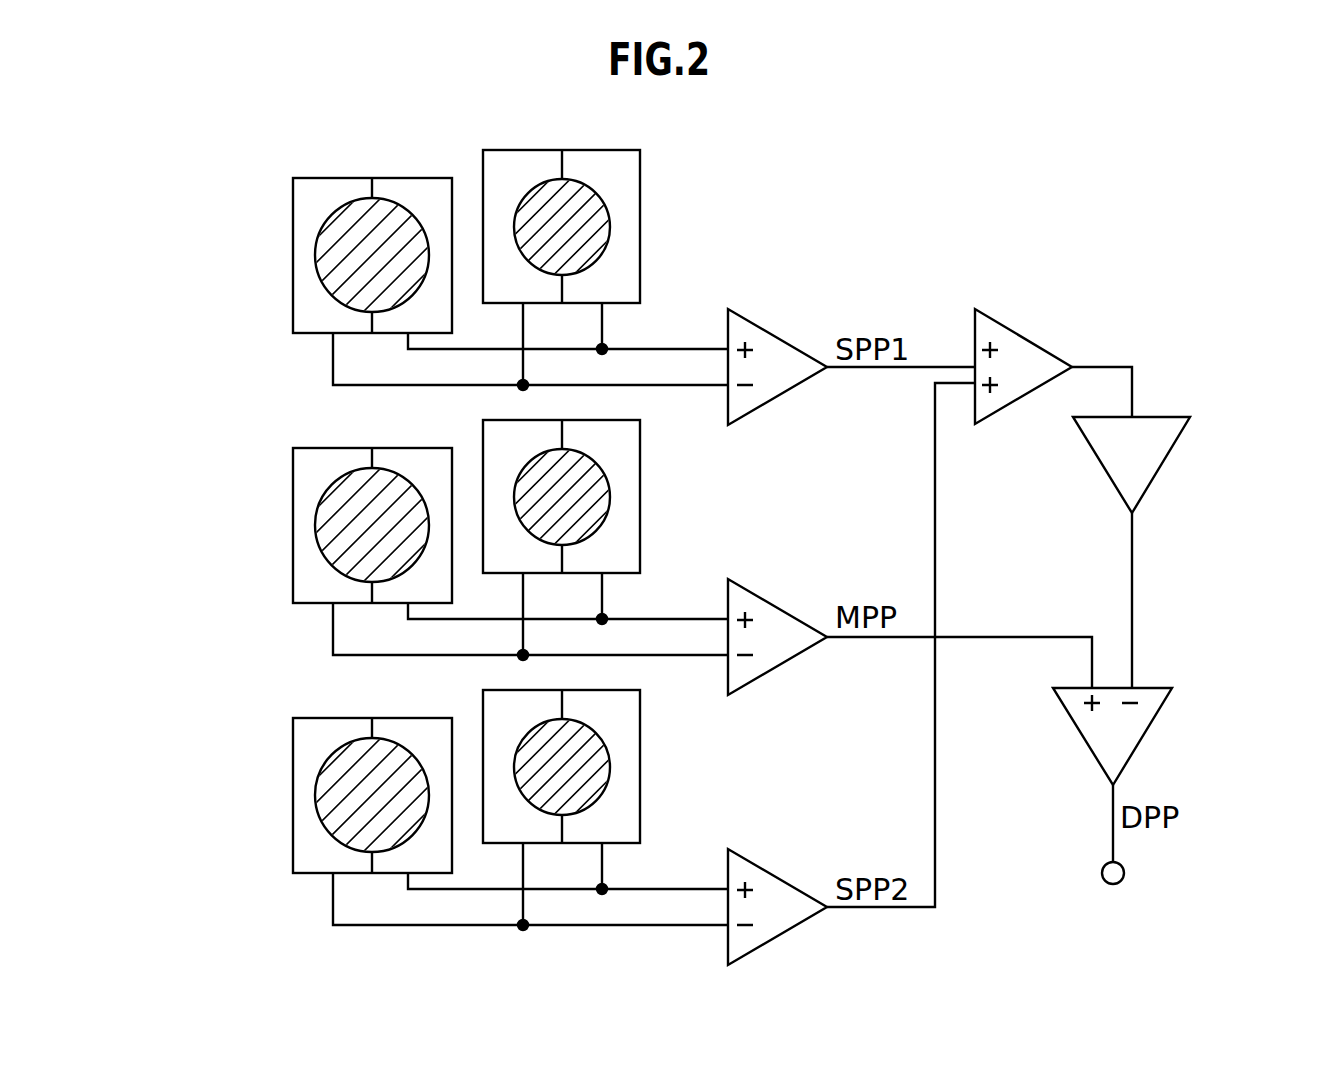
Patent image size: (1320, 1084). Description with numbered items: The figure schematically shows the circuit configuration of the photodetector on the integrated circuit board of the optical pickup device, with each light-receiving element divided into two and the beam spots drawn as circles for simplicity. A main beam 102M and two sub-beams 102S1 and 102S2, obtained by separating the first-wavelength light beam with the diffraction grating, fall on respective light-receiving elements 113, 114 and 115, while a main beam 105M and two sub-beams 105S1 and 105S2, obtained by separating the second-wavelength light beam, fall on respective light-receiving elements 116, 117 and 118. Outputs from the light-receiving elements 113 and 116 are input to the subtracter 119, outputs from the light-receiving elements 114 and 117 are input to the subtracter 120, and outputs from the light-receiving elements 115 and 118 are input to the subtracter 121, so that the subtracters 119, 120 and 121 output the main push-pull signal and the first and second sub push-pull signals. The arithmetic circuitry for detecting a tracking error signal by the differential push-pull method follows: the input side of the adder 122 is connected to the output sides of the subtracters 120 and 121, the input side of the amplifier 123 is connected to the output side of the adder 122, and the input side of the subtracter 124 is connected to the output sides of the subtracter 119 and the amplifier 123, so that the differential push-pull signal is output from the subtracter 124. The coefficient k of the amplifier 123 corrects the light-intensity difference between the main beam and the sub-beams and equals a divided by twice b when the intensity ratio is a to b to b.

The light-receiving element 114 is at (293, 215).
The sub-beam 102S1 is at (318, 277).
The light-receiving element 117 is at (640, 178).
The sub-beam 105S1 is at (609, 218).
The subtracter 120 is at (770, 333).
The light-receiving element 113 is at (293, 485).
The main beam 102M is at (318, 547).
The light-receiving element 116 is at (640, 448).
The main beam 105M is at (609, 488).
The subtracter 119 is at (770, 603).
The light-receiving element 115 is at (293, 755).
The sub-beam 102S2 is at (318, 817).
The light-receiving element 118 is at (640, 718).
The sub-beam 105S2 is at (609, 758).
The subtracter 121 is at (770, 873).
The adder 122 is at (1015, 333).
The amplifier 123 is at (1167, 455).
The subtracter 124 is at (1145, 733).